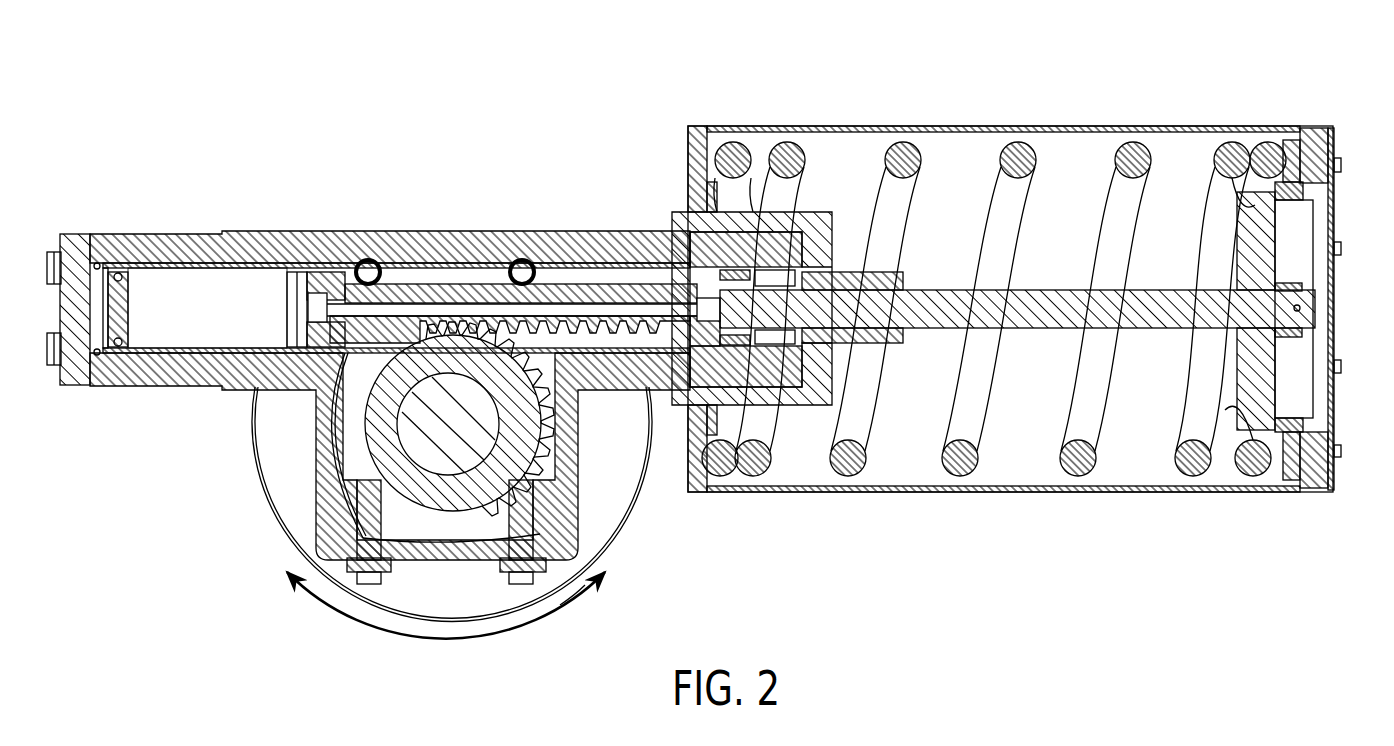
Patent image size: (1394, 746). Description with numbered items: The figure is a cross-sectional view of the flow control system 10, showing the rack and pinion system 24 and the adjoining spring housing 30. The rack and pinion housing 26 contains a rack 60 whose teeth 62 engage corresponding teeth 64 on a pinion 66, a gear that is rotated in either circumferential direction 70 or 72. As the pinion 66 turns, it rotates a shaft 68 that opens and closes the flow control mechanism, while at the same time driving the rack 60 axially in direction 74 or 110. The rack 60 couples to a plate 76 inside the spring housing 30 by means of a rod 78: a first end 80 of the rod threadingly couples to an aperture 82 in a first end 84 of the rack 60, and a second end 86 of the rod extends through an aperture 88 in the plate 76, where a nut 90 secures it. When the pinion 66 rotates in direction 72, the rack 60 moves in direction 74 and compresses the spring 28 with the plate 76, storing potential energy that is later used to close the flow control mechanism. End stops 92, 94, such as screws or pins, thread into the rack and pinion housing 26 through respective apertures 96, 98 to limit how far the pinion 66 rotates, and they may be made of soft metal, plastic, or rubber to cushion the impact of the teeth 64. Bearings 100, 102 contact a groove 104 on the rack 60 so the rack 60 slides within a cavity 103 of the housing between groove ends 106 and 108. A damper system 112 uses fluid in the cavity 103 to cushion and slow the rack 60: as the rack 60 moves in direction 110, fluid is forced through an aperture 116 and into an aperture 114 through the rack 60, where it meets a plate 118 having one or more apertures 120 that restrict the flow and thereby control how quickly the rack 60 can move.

The flow control system 10 is at (910, 45).
The rack and pinion system 24 is at (550, 78).
The rack and pinion housing 26 is at (285, 237).
The spring 28 is at (1012, 158).
The spring housing 30 is at (995, 492).
The rack 60 is at (418, 237).
The teeth 62 is at (582, 320).
The teeth 64 is at (548, 430).
The pinion 66 is at (375, 430).
The shaft 68 is at (442, 460).
The circumferential direction 70 is at (327, 606).
The circumferential direction 72 is at (567, 606).
The axial direction 74 is at (395, 78).
The plate 76 is at (1253, 397).
The rod 78 is at (1040, 305).
The first end 80 is at (762, 295).
The aperture 82 is at (665, 237).
The first end 84 is at (710, 337).
The second end 86 is at (1308, 305).
The aperture 88 is at (1233, 333).
The nut 90 is at (1290, 337).
The end stop 92 is at (370, 553).
The end stop 94 is at (530, 548).
The aperture 96 is at (357, 512).
The aperture 98 is at (540, 517).
The bearing 100 is at (360, 237).
The bearing 102 is at (515, 237).
The cavity 103 is at (165, 340).
The groove 104 is at (460, 237).
The groove end 106 is at (313, 237).
The groove end 108 is at (710, 210).
The axial direction 110 is at (430, 78).
The damper system 112 is at (243, 165).
The aperture 114 is at (390, 237).
The aperture 116 is at (787, 328).
The plate 118 is at (273, 337).
The apertures 120 is at (288, 330).